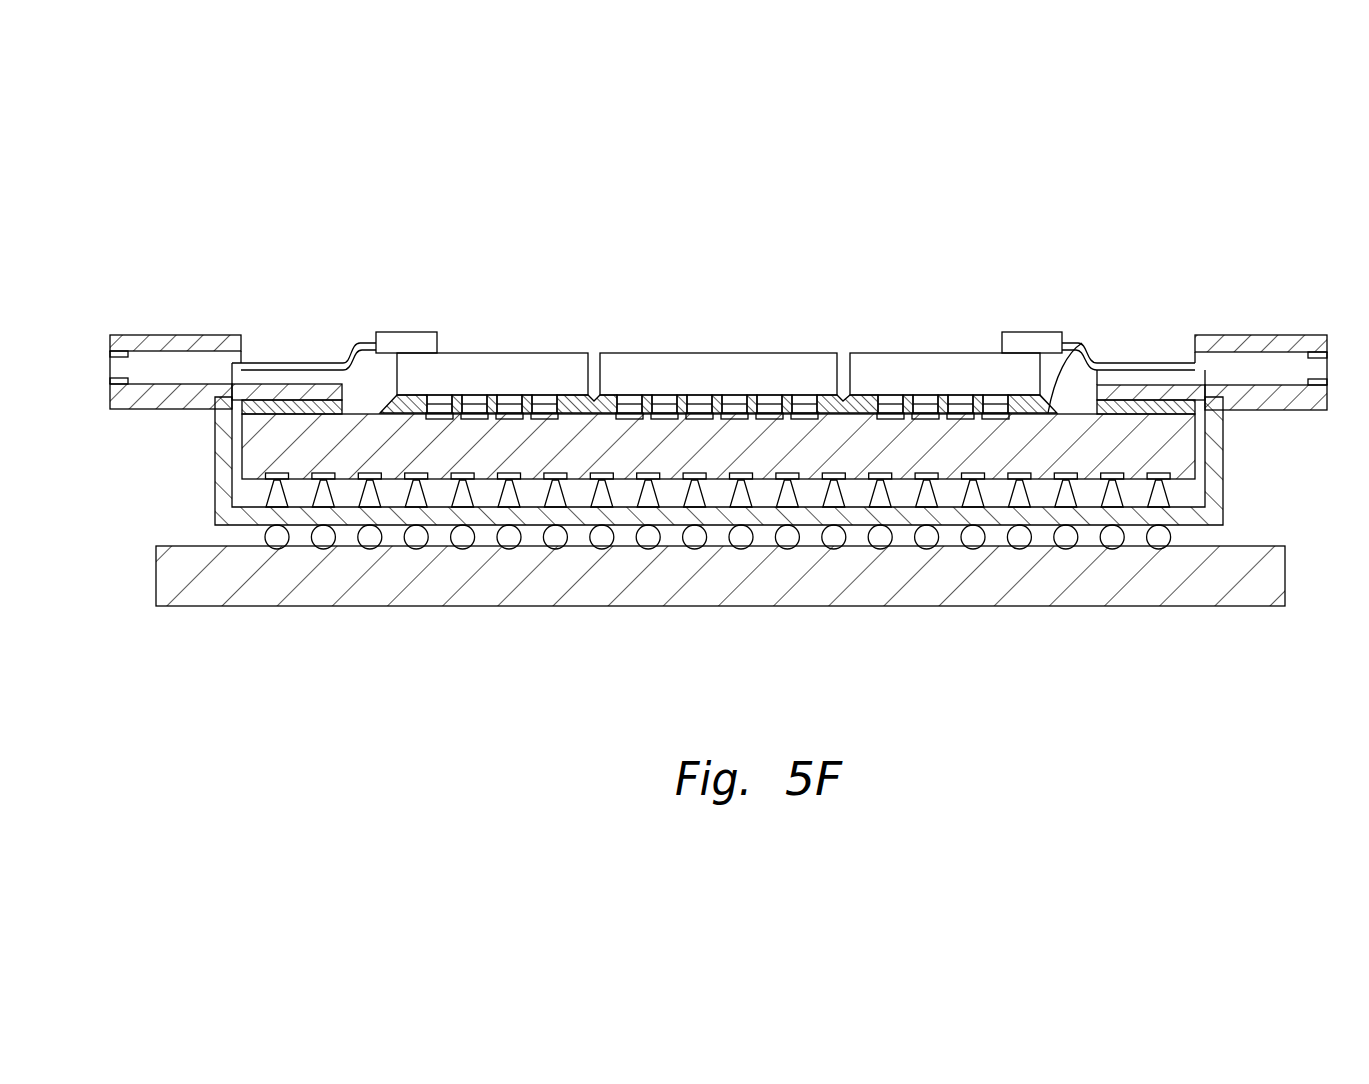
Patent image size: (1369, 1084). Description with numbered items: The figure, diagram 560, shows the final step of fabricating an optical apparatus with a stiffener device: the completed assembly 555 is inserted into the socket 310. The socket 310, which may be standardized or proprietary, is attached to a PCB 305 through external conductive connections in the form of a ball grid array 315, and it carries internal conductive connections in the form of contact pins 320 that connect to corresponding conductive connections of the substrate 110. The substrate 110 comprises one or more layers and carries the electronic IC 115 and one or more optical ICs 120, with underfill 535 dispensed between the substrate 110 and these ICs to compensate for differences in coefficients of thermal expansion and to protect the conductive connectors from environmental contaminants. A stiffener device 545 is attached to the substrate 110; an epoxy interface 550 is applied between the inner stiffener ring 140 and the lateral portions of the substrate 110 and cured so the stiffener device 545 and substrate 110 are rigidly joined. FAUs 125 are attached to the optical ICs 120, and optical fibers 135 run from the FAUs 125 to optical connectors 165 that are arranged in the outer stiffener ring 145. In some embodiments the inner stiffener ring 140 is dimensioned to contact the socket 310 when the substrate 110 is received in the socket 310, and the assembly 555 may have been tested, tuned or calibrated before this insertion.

The substrate 110 is at (1183, 457).
The electronic IC 115 is at (727, 353).
The optical IC 120 is at (498, 353).
The FAU 125 is at (417, 332).
The optical fiber 135 is at (307, 363).
The inner stiffener ring 140 is at (263, 384).
The outer stiffener ring 145 is at (197, 343).
The optical connector 165 is at (682, 342).
The PCB 305 is at (156, 576).
The socket 310 is at (215, 458).
The ball grid array 315 is at (415, 537).
The contact pins 320 is at (510, 500).
The underfill 535 is at (1078, 352).
The stiffener device 545 is at (110, 362).
The epoxy interface 550 is at (1167, 405).
The assembly of diagram 555 is at (843, 280).
The diagram 560 is at (1280, 215).